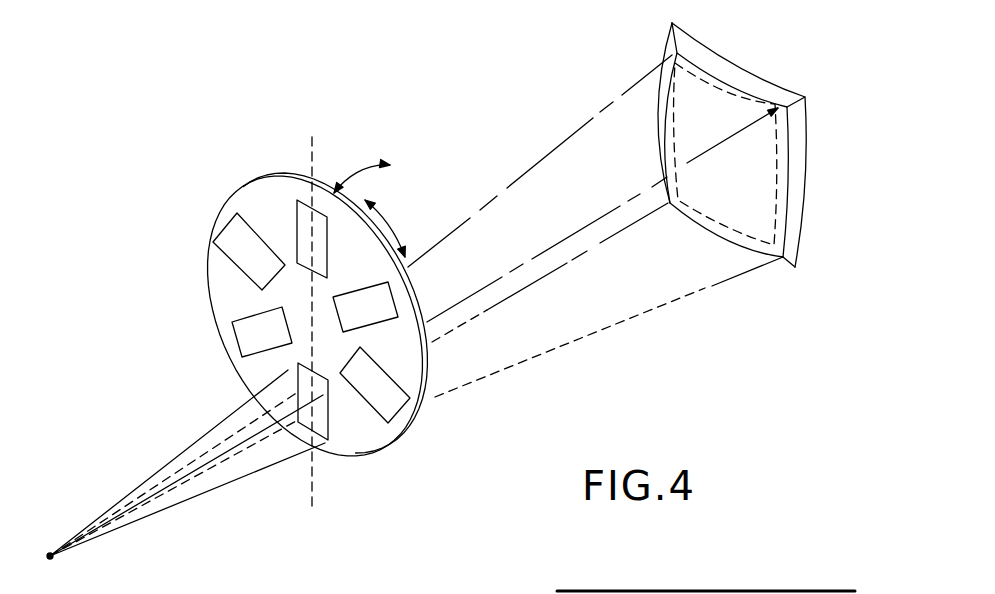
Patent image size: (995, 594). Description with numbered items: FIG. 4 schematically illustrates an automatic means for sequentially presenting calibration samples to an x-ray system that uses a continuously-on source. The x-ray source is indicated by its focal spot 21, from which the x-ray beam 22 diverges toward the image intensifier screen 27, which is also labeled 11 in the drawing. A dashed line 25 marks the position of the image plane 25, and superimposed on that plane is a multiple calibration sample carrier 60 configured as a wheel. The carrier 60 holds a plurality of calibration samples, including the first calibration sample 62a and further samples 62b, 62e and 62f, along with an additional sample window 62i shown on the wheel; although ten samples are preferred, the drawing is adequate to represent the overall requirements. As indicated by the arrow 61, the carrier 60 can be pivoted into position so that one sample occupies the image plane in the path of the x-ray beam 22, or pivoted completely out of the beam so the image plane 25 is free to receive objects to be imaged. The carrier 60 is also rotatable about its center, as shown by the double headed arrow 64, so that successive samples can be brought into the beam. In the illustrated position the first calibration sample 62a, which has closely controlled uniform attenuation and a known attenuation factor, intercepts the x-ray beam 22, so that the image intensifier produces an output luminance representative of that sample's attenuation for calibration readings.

The concave mirror 11 is at (803, 258).
The focal spot 21 is at (48, 553).
The x-ray beam 22 is at (658, 281).
The image plane 25 is at (312, 506).
The image intensifier screen 27 is at (810, 120).
The multiple calibration sample carrier 60 is at (428, 372).
The arrow 61 is at (353, 170).
The double headed arrow 64 is at (390, 230).
The first calibration sample 62a is at (325, 422).
The calibration sample 62b is at (397, 403).
The calibration sample 62e is at (233, 238).
The calibration sample 62f is at (246, 340).
The filter window i 62i is at (297, 218).